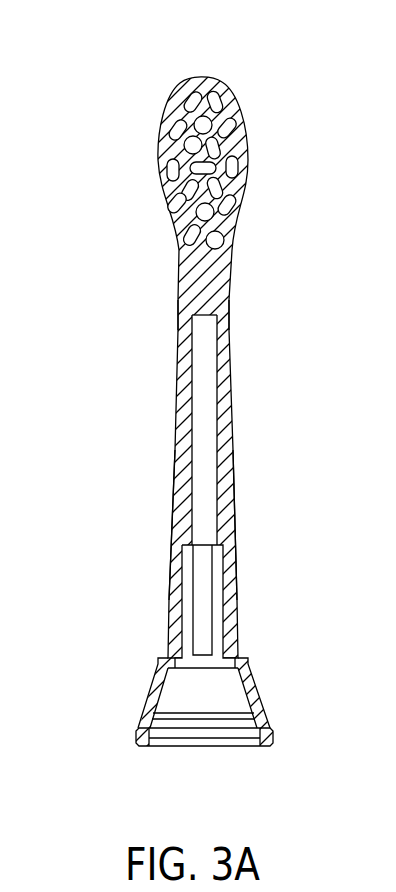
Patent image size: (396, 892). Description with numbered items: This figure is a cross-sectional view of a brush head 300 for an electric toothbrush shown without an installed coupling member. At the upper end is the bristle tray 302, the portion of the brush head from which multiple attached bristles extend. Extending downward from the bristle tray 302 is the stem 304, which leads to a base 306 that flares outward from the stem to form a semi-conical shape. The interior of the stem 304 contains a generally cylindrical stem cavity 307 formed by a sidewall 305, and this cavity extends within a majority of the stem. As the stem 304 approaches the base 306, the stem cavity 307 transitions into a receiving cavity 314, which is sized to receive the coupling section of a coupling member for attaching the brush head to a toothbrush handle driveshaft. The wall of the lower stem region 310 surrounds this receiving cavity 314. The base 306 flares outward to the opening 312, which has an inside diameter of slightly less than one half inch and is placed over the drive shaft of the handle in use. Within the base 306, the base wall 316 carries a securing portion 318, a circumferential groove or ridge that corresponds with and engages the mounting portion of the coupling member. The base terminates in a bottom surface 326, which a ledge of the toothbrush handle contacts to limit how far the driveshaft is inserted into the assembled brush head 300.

The brush head 300 is at (88, 70).
The bristle tray 302 is at (227, 100).
The stem 304 is at (230, 333).
The sidewall 305 is at (218, 417).
The base 306 is at (283, 687).
The stem cavity 307 is at (195, 365).
The lower neck wall 310 is at (225, 577).
The opening 312 is at (207, 708).
The receiving cavity 314 is at (205, 600).
The base wall 316 is at (160, 673).
The securing portion 318 is at (152, 712).
The bottom surface 326 is at (145, 742).